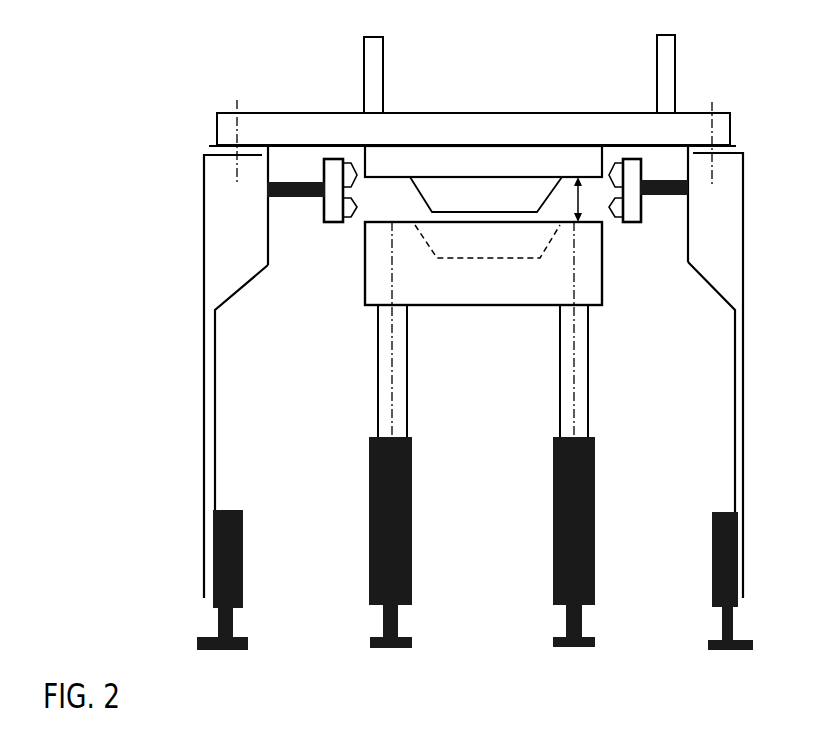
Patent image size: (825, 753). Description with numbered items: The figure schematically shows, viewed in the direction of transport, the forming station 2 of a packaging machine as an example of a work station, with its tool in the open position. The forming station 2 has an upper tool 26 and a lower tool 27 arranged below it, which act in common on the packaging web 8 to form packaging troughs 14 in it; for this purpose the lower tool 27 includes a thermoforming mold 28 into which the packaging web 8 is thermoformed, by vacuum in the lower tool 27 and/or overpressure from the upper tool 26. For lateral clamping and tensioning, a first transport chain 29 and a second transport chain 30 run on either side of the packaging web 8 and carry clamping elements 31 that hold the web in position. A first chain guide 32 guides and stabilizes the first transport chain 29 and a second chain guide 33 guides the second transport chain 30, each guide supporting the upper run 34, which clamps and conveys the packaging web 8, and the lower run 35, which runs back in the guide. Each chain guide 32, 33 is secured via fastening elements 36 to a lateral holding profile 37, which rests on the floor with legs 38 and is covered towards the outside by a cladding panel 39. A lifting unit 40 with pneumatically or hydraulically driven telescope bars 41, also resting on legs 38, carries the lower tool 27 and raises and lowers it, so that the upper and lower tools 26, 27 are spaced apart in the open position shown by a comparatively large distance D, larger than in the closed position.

The forming station 2 is at (148, 64).
The packaging web 8 is at (385, 178).
The packaging troughs 14 is at (500, 208).
The upper tool 26 is at (307, 127).
The lower tool 27 is at (498, 292).
The thermoforming mold 28 is at (469, 246).
The first transport chain 29 is at (346, 162).
The second transport chain 30 is at (612, 176).
The clamping elements 31 is at (356, 172).
The first chain guide 32 is at (323, 212).
The second chain guide 33 is at (643, 212).
The upper run 34 is at (642, 172).
The lower run 35 is at (615, 212).
The fastening elements 36 is at (280, 198).
The lateral holding profile 37 is at (232, 292).
The legs 38 is at (233, 625).
The cladding panel 39 is at (205, 493).
The lifting unit 40 is at (354, 421).
The telescope bars 41 is at (385, 382).
The distance D is at (571, 199).